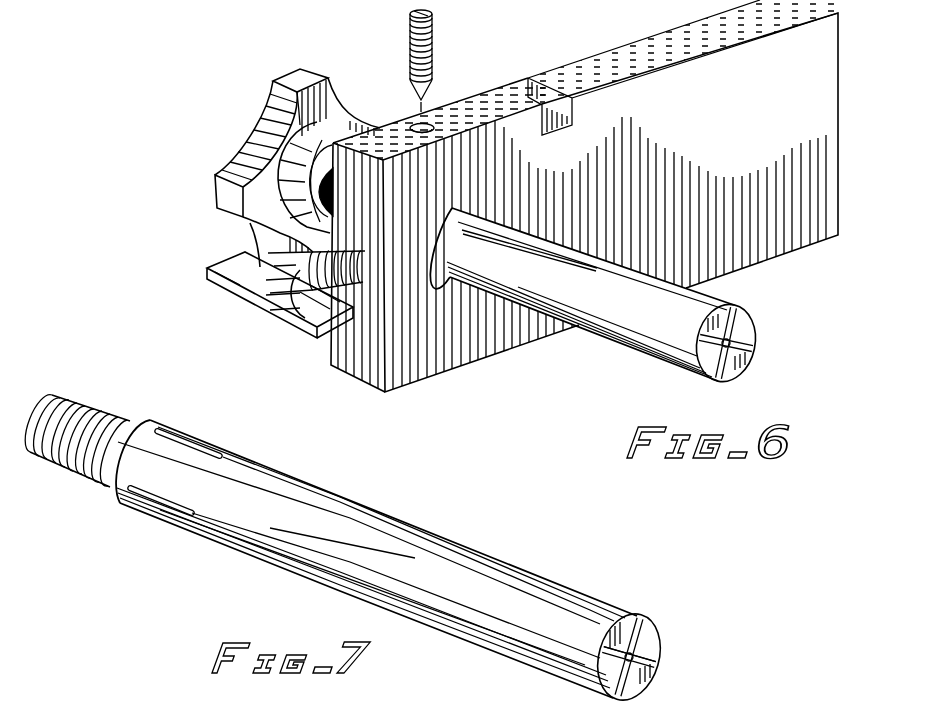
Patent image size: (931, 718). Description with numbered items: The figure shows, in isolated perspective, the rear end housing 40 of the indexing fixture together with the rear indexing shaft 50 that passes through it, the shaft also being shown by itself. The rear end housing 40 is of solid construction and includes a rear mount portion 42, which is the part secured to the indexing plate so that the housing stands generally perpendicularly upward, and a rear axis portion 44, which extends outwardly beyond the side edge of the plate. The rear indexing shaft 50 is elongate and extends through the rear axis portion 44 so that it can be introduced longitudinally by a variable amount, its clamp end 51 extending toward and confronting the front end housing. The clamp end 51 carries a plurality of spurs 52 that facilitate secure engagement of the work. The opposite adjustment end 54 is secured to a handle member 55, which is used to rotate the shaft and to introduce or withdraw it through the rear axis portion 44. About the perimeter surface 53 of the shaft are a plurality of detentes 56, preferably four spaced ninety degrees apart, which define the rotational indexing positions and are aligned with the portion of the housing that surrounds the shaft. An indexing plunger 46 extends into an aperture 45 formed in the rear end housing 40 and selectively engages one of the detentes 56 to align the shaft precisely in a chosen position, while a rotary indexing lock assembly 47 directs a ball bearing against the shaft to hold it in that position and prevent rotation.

In FIG. 6, the rear end housing 40 is at (611, 52).
In FIG. 6, the rear mount portion 42 is at (832, 233).
In FIG. 6, the rear axis portion 44 is at (455, 348).
In FIG. 6, the aperture 45 is at (435, 124).
In FIG. 6, the indexing plunger 46 is at (433, 42).
In FIG. 6, the rotary indexing lock assembly 47 is at (367, 289).
In FIG. 6, the rear indexing shaft 50 is at (620, 313).
In FIG. 7, the rear indexing shaft 50 is at (365, 544).
In FIG. 6, the clamp end 51 is at (720, 377).
In FIG. 7, the clamp end 51 is at (658, 652).
In FIG. 6, the spurs 52 is at (747, 328).
In FIG. 6, the perimeter surface 53 is at (623, 268).
In FIG. 7, the perimeter surface 53 is at (323, 572).
In FIG. 6, the adjustment end 54 is at (326, 196).
In FIG. 7, the adjustment end 54 is at (111, 420).
In FIG. 6, the handle member 55 is at (226, 194).
In FIG. 7, the detentes 56 is at (200, 447).